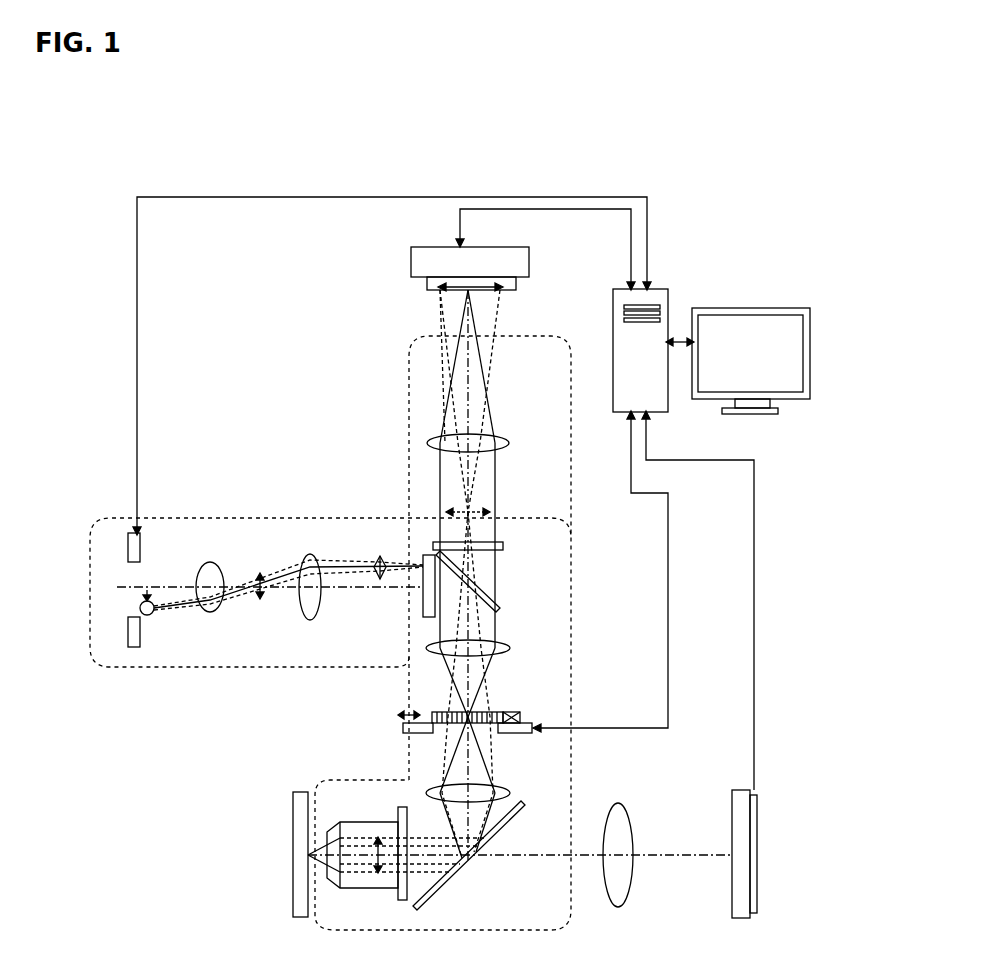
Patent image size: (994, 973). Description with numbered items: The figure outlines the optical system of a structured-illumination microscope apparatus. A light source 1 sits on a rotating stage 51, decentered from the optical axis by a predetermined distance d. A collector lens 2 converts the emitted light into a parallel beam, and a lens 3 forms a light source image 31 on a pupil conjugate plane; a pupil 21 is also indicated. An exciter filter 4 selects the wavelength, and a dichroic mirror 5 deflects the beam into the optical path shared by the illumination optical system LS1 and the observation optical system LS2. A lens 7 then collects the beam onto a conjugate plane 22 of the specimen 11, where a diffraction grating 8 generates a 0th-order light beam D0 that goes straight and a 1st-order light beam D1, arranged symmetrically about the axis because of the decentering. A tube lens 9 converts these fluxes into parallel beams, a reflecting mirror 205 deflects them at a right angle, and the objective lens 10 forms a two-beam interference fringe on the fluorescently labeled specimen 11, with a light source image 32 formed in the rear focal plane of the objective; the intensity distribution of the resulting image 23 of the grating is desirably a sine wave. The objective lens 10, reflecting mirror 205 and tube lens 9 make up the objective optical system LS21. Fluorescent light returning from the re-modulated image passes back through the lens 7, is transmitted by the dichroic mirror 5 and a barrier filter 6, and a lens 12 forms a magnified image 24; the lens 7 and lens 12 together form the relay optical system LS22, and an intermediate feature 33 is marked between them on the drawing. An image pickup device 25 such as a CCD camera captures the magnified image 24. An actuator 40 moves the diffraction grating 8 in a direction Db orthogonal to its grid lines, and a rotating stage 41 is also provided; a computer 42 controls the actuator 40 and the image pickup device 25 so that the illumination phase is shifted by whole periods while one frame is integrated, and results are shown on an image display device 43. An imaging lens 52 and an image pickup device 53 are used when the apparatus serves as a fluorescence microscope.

The light source 1 is at (141, 622).
The collector lens 2 is at (205, 563).
The lens 3 is at (309, 555).
The exciter filter 4 is at (423, 562).
The dichroic mirror 5 is at (499, 609).
The barrier filter 6 is at (503, 545).
The lens 7 is at (510, 648).
The diffraction grating 8 is at (492, 712).
The tube lens 9 is at (430, 788).
The objective lens 10 is at (350, 822).
The specimen 11 is at (300, 918).
The lens 12 is at (510, 447).
The pupil 21 is at (260, 576).
The conjugate plane 22 is at (505, 734).
The image of the diffraction grating 23 is at (312, 875).
The magnified image 24 is at (516, 287).
The image pickup device 25 is at (447, 247).
The light source image 31 is at (377, 559).
The light source image 32 is at (374, 885).
The intermediate image 33 is at (492, 512).
The actuator 40 is at (516, 712).
The rotating stage 41 is at (528, 724).
The computer 42 is at (668, 291).
The image display device 43 is at (753, 308).
The rotating stage 51 is at (128, 553).
The imaging lens 52 is at (630, 815).
The image pickup device 53 is at (757, 815).
The reflecting mirror 205 is at (440, 893).
The decentering distance d is at (138, 604).
The movement direction Db is at (389, 717).
The 1st-order light beam D1 is at (483, 746).
The 0th-order light beam D0 is at (472, 786).
The illumination optical system LS1 is at (290, 518).
The observation optical system LS2 is at (409, 452).
The objective optical system LS21 is at (350, 752).
The relay optical system LS22 is at (598, 505).